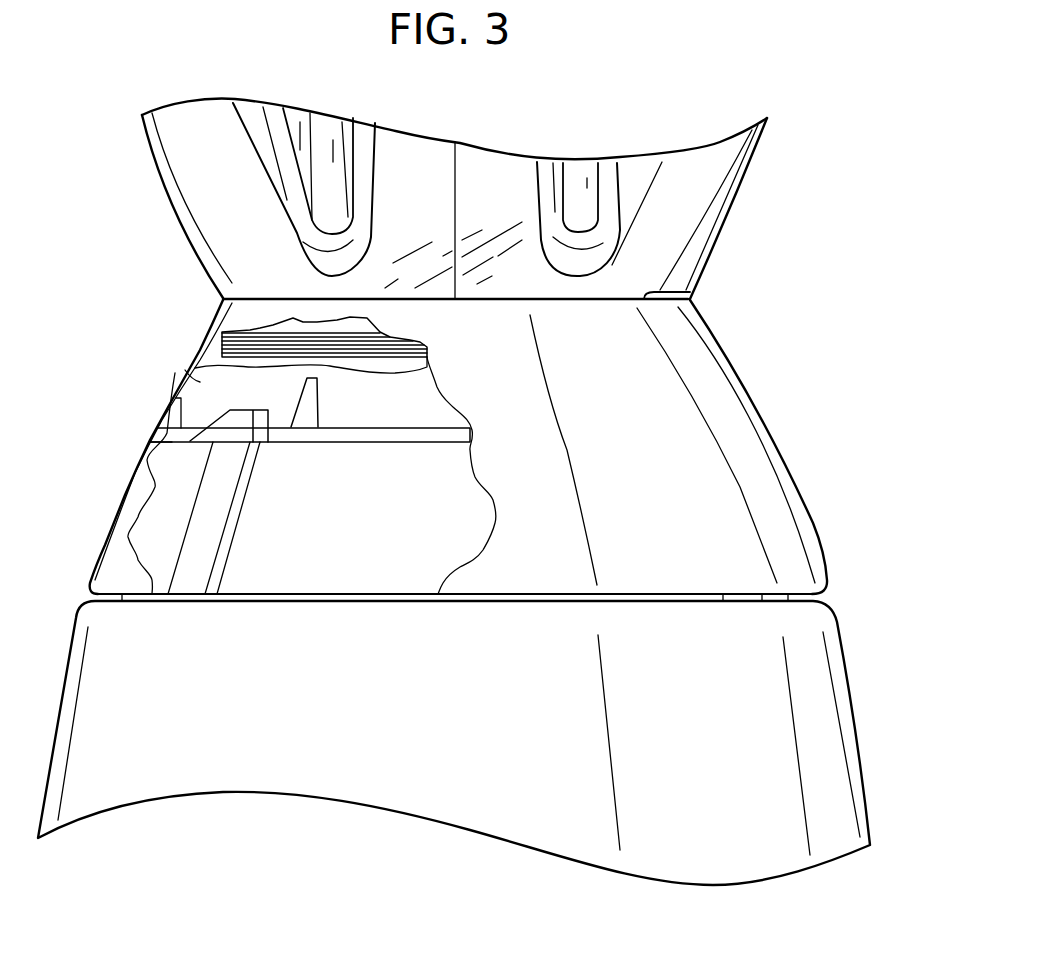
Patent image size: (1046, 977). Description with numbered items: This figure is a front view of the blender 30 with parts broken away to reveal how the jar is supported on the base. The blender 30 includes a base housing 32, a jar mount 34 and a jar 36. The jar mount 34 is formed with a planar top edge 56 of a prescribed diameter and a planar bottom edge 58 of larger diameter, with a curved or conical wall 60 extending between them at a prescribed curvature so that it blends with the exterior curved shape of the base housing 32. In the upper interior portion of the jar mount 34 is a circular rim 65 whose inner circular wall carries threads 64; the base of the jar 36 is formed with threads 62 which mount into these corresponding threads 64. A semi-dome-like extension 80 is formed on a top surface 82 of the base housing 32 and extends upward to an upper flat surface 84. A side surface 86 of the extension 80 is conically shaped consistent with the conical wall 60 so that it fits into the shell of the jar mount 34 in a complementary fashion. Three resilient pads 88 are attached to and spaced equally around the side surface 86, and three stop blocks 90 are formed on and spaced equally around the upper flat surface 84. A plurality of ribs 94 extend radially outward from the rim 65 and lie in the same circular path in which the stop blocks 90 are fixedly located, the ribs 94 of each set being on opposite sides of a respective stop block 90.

The blender 30 is at (688, 132).
The base housing 32 is at (838, 620).
The jar mount 34 is at (762, 417).
The jar 36 is at (746, 194).
The planar top edge 56 is at (692, 293).
The planar bottom edge 58 is at (725, 596).
The conical wall 60 is at (767, 483).
The threads 62 is at (293, 320).
The threads 64 is at (222, 333).
The circular rim 65 is at (200, 382).
The semi-dome-like extension 80 is at (447, 440).
The top surface 82 is at (763, 594).
The upper flat surface 84 is at (172, 440).
The side surface 86 is at (273, 585).
The resilient pads 88 is at (187, 537).
The stop blocks 90 is at (227, 420).
The ribs 94 is at (170, 425).